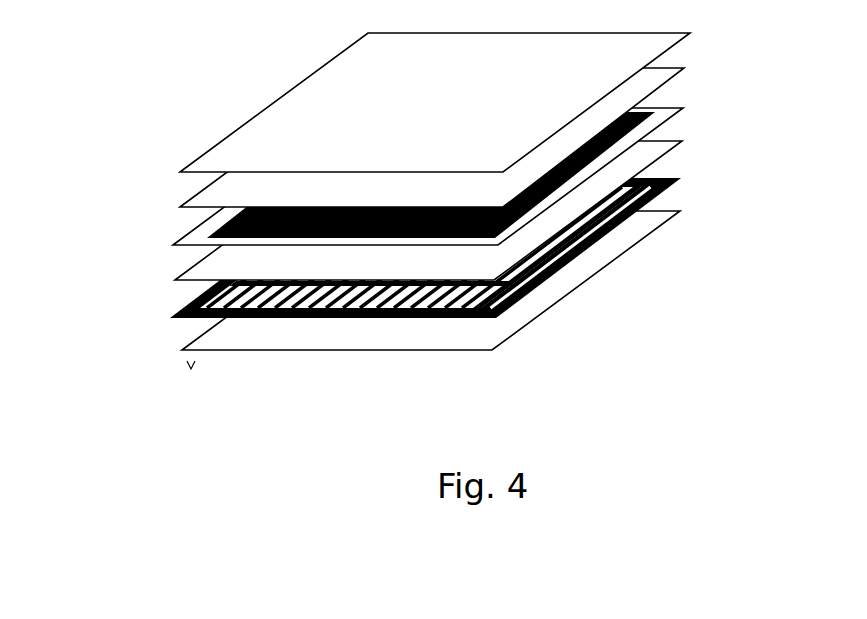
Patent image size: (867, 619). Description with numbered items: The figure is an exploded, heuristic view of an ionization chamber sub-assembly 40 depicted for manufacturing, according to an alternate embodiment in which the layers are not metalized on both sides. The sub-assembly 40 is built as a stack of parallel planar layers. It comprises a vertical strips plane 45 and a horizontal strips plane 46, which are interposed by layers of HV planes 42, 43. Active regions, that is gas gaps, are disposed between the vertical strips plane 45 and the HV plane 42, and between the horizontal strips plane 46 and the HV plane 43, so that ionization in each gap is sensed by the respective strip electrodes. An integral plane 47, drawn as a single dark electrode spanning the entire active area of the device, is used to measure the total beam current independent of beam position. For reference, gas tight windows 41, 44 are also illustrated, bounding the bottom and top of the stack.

The ionization chamber sub-assembly 40 is at (399, 217).
The gas tight window 41 is at (168, 347).
The HV plane 42 is at (188, 273).
The HV plane 43 is at (186, 198).
The gas tight window 44 is at (204, 141).
The vertical strips plane 45 is at (659, 175).
The horizontal strips plane 46 is at (459, 158).
The integral plane 47 is at (657, 106).